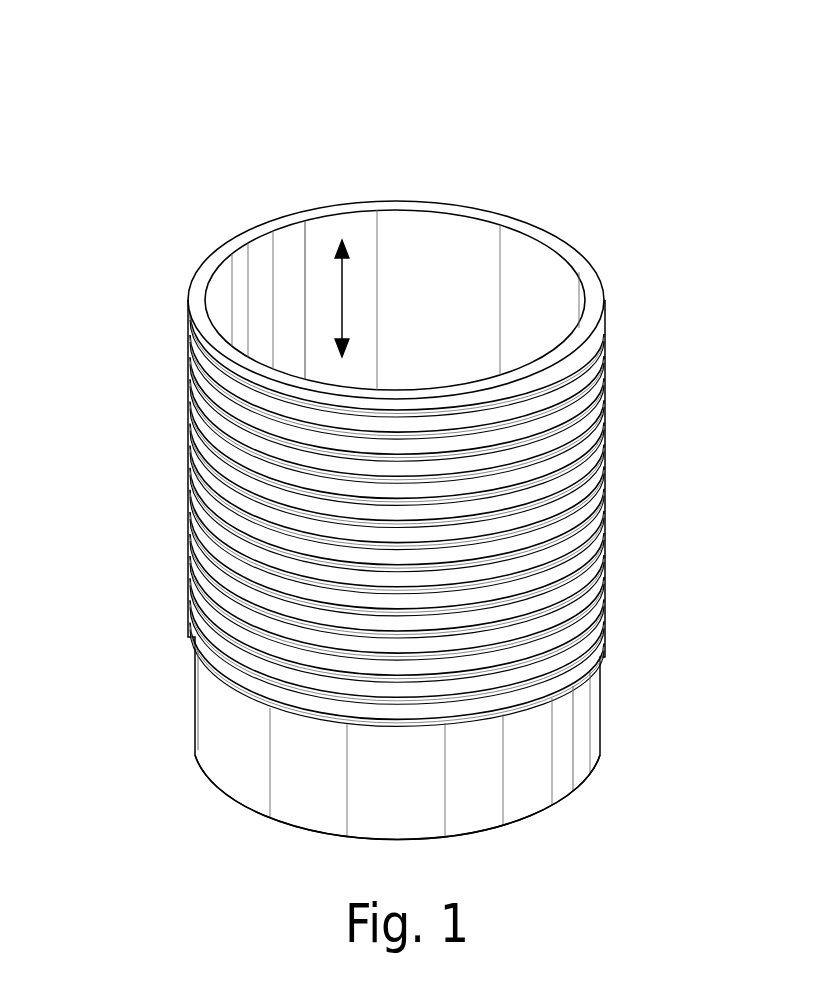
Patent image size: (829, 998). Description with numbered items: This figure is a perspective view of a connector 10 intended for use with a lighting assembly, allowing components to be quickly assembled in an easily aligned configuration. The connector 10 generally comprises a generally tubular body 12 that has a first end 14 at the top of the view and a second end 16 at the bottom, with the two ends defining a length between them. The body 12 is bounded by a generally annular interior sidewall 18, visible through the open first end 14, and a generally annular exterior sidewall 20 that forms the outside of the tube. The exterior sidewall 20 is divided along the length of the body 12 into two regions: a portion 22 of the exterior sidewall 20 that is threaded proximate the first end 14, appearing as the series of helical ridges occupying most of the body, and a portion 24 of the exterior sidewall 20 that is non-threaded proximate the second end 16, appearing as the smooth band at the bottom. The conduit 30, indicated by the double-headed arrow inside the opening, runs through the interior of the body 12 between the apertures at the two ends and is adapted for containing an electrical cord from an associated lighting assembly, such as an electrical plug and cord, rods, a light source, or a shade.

The connector 10 is at (628, 97).
The generally tubular body 12 is at (605, 514).
The first end 14 is at (605, 307).
The second end 16 is at (600, 754).
The generally annular interior sidewall 18 is at (451, 281).
The generally annular exterior sidewall 20 is at (375, 799).
The threaded portion of exterior sidewall 22 is at (156, 453).
The non-threaded portion of exterior sidewall 24 is at (159, 698).
The conduit 30 is at (341, 298).